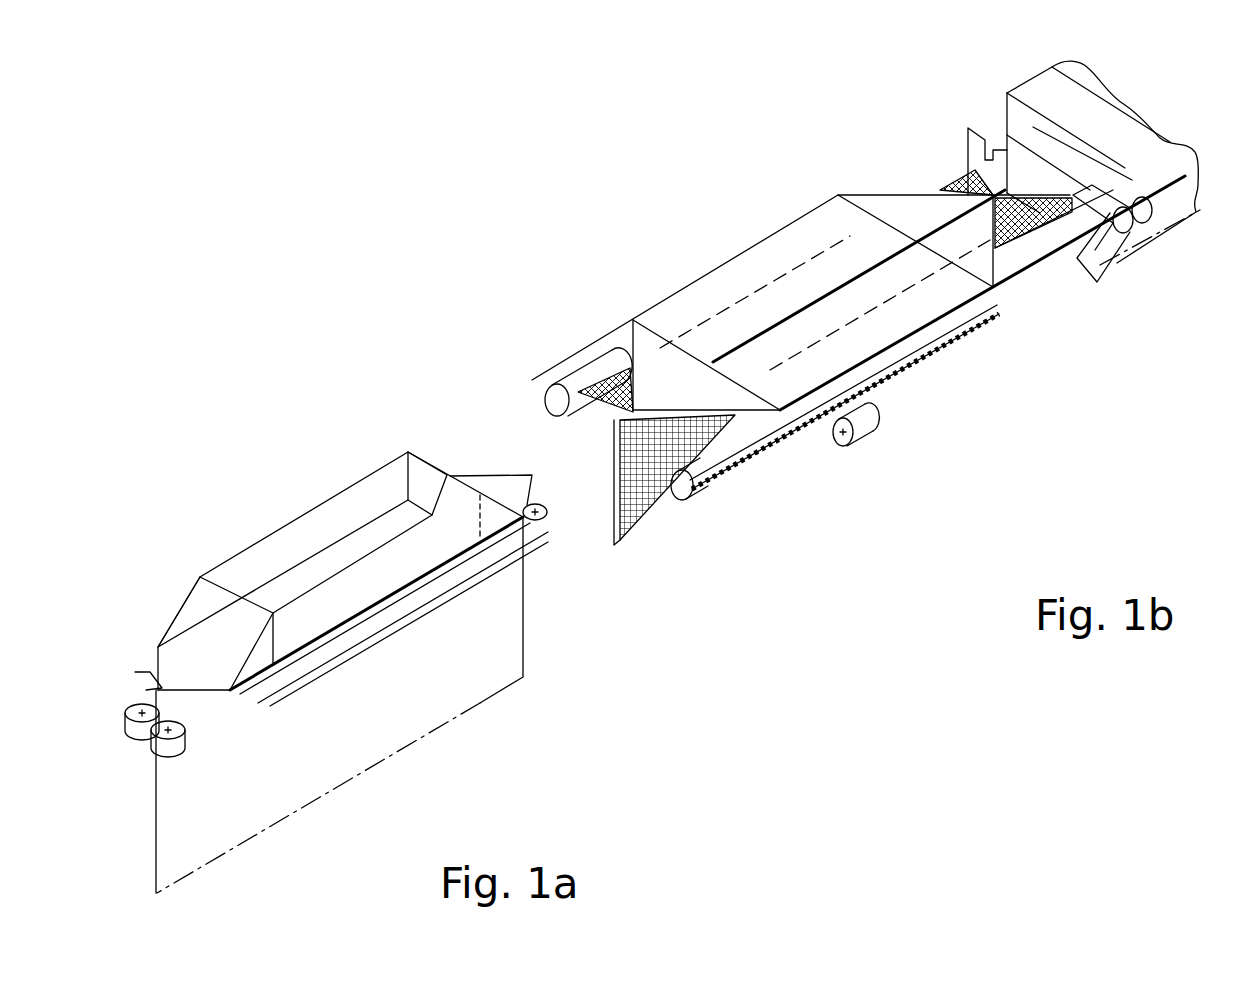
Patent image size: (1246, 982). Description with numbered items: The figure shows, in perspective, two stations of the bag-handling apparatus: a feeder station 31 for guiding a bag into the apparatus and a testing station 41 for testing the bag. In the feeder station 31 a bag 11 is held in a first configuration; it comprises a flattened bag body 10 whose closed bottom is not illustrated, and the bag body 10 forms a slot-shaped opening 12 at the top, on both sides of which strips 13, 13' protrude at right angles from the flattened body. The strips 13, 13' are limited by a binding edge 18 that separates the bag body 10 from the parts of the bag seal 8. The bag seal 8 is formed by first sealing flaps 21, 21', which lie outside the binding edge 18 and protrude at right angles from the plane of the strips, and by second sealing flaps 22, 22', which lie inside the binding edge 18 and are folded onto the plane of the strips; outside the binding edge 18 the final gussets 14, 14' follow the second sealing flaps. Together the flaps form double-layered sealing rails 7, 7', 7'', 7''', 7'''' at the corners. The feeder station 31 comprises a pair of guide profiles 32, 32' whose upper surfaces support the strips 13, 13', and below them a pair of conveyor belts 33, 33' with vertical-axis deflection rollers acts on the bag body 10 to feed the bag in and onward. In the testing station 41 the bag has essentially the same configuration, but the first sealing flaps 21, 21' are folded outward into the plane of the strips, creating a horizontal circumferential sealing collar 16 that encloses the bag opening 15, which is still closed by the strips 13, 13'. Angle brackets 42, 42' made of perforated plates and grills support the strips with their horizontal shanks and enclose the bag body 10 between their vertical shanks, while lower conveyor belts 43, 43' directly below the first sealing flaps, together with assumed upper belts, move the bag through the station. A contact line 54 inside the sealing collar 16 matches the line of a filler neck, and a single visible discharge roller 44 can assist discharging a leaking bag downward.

In FIG. 1A, the sealing rail 7 is at (177, 630).
In FIG. 1B, the sealing rail 7 is at (650, 343).
In FIG. 1A, the sealing rail 7' is at (476, 401).
In FIG. 1B, the sealing rail 7' is at (954, 171).
In FIG. 1A, the sealing rail 7'' is at (376, 731).
In FIG. 1B, the sealing rail 7'' is at (876, 497).
In FIG. 1A, the sealing rail 7''' is at (554, 610).
In FIG. 1B, the sealing rail 7'''' is at (1107, 357).
In FIG. 1A, the bag seal 8 is at (370, 467).
In FIG. 1A, the bag body 10 is at (440, 677).
In FIG. 1A, the bag 11 is at (178, 307).
In FIG. 1A, the slot-shaped opening 12 is at (205, 650).
In FIG. 1B, the slot-shaped opening 12 is at (760, 330).
In FIG. 1A, the strip 13 is at (232, 620).
In FIG. 1B, the strip 13 is at (790, 290).
In FIG. 1A, the strip 13' is at (291, 759).
In FIG. 1B, the strip 13' is at (964, 368).
In FIG. 1A, the final gusset 14 is at (175, 672).
In FIG. 1B, the final gusset 14 is at (640, 388).
In FIG. 1A, the final gusset 14' is at (602, 600).
In FIG. 1B, the final gusset 14' is at (958, 129).
In FIG. 1A, the bag opening 15 is at (343, 550).
In FIG. 1B, the sealing collar 16 is at (962, 650).
In FIG. 1A, the binding edge 18 is at (295, 565).
In FIG. 1B, the binding edge 18 is at (825, 250).
In FIG. 1A, the first sealing flap 21 is at (247, 563).
In FIG. 1B, the first sealing flap 21 is at (707, 307).
In FIG. 1A, the first sealing flap 21' is at (291, 478).
In FIG. 1B, the first sealing flap 21' is at (1013, 357).
In FIG. 1A, the second sealing flap 22 is at (170, 633).
In FIG. 1B, the second sealing flap 22 is at (735, 440).
In FIG. 1A, the second sealing flap 22' is at (476, 410).
In FIG. 1B, the second sealing flap 22' is at (1114, 245).
In FIG. 1A, the feeder station 31 is at (277, 280).
In FIG. 1A, the guide profile 32 is at (145, 677).
In FIG. 1A, the guide profile 32' is at (93, 692).
In FIG. 1A, the conveyor belt 33 is at (133, 732).
In FIG. 1A, the conveyor belt 33' is at (138, 777).
In FIG. 1B, the testing station 41 is at (575, 106).
In FIG. 1B, the angle bracket 42 is at (590, 385).
In FIG. 1B, the angle bracket 42' is at (686, 533).
In FIG. 1B, the lower conveyor belt 43 is at (607, 345).
In FIG. 1B, the lower conveyor belt 43' is at (835, 442).
In FIG. 1B, the discharge roller 44 is at (870, 430).
In FIG. 1B, the contact line 54 is at (1062, 98).